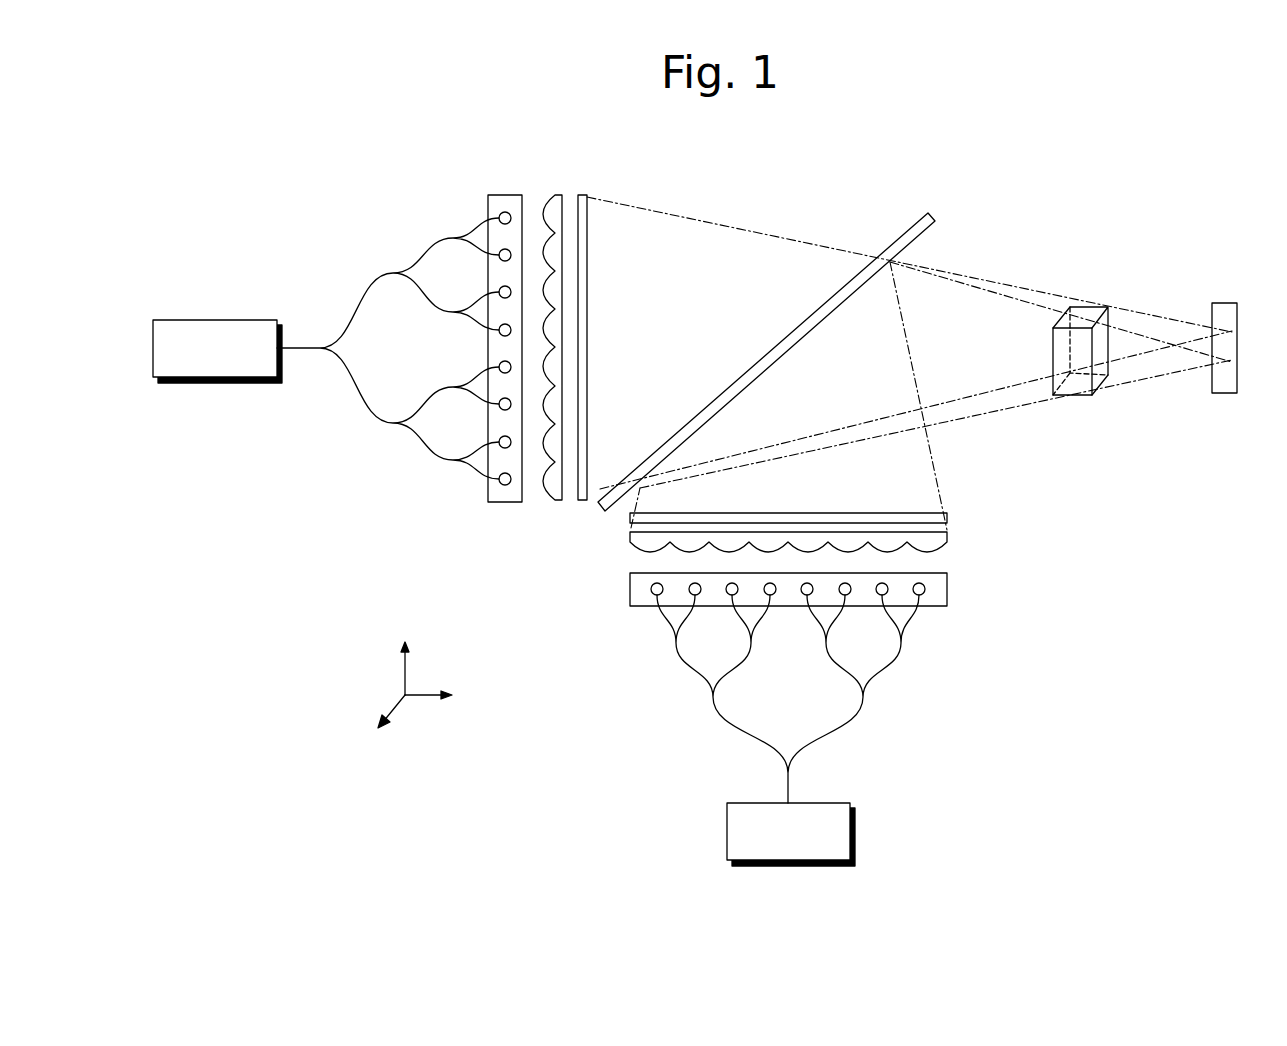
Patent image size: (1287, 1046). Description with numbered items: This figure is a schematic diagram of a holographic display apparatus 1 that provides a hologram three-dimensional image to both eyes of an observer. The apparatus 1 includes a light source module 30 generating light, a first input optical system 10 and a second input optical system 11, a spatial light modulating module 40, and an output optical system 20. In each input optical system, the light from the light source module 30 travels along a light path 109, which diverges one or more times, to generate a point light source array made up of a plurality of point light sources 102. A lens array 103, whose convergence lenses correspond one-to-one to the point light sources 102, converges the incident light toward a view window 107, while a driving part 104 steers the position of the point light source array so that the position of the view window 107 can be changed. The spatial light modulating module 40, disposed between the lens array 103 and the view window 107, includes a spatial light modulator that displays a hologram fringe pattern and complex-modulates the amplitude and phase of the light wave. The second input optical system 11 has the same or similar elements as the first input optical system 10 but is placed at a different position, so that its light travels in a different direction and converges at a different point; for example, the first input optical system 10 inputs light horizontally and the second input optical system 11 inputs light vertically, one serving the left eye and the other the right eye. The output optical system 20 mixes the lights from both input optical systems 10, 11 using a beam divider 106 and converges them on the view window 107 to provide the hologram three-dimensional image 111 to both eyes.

The holographic display apparatus 1 is at (1081, 160).
The first input optical system 10 is at (328, 183).
The second input optical system 11 is at (654, 503).
The output optical system 20 is at (1155, 295).
The light source module 30 is at (232, 320).
The spatial light modulating module 40 is at (587, 298).
The point light sources 102 is at (502, 211).
The lens array 103 is at (555, 202).
The driving part 104 is at (508, 200).
The beam divider 106 is at (902, 240).
The view window 107 is at (1225, 310).
The light path 109 is at (392, 272).
The hologram 3D image 111 is at (1085, 315).